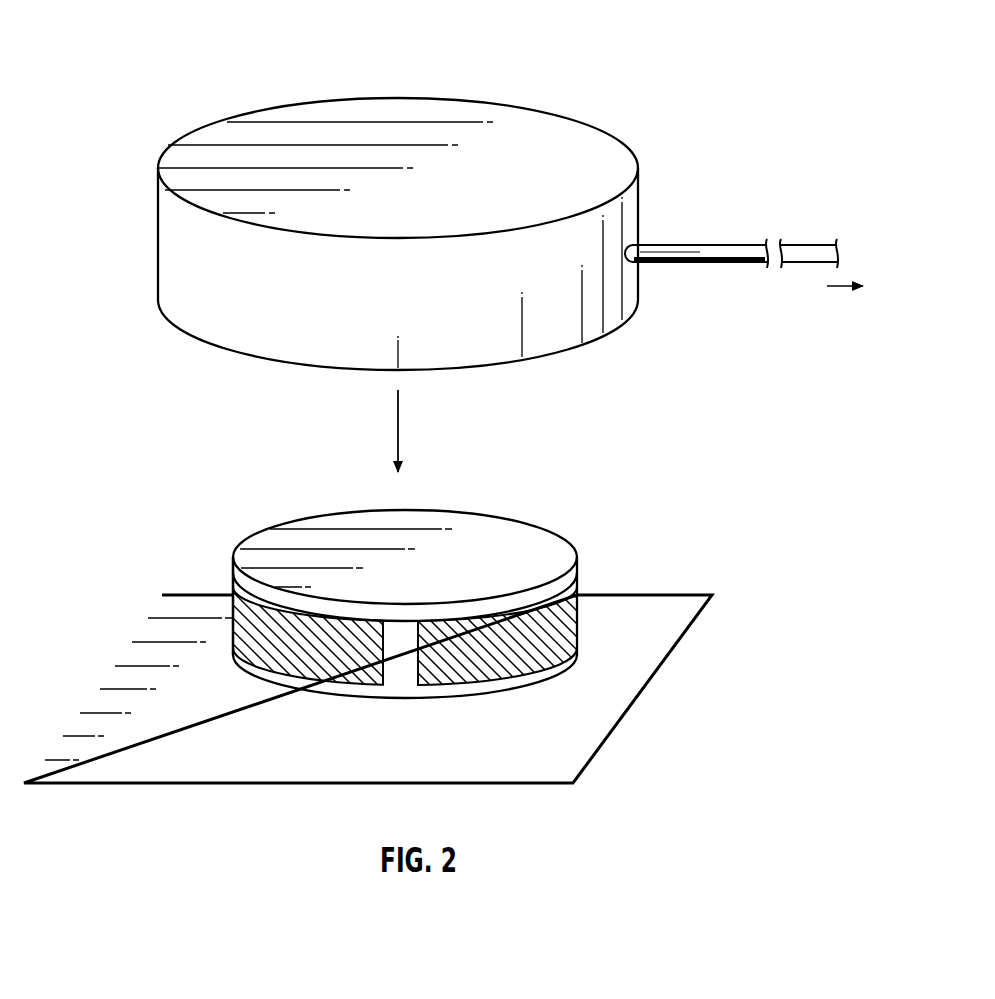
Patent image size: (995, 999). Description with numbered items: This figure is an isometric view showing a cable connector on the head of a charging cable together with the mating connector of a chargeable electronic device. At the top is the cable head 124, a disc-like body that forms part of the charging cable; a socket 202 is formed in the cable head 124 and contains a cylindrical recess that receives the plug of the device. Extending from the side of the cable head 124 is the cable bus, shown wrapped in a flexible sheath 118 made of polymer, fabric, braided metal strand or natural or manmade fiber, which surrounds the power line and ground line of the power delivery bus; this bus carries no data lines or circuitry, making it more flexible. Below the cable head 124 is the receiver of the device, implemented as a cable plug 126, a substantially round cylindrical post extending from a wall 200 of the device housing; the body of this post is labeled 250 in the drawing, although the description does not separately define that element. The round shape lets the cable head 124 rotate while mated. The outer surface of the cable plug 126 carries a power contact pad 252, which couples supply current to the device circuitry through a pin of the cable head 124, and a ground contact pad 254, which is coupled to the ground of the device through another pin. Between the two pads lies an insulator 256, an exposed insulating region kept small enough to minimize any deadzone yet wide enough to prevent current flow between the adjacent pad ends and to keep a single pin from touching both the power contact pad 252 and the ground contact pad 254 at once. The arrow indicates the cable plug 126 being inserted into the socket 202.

The cable head 124 is at (181, 48).
The socket 202 is at (640, 202).
The flexible sheath 118 is at (789, 194).
The cable plug 126 is at (141, 476).
The wall 200 is at (652, 636).
The lower disc 250 is at (491, 533).
The power contact pad 252 is at (235, 577).
The ground contact pad 254 is at (542, 622).
The insulator 256 is at (402, 637).